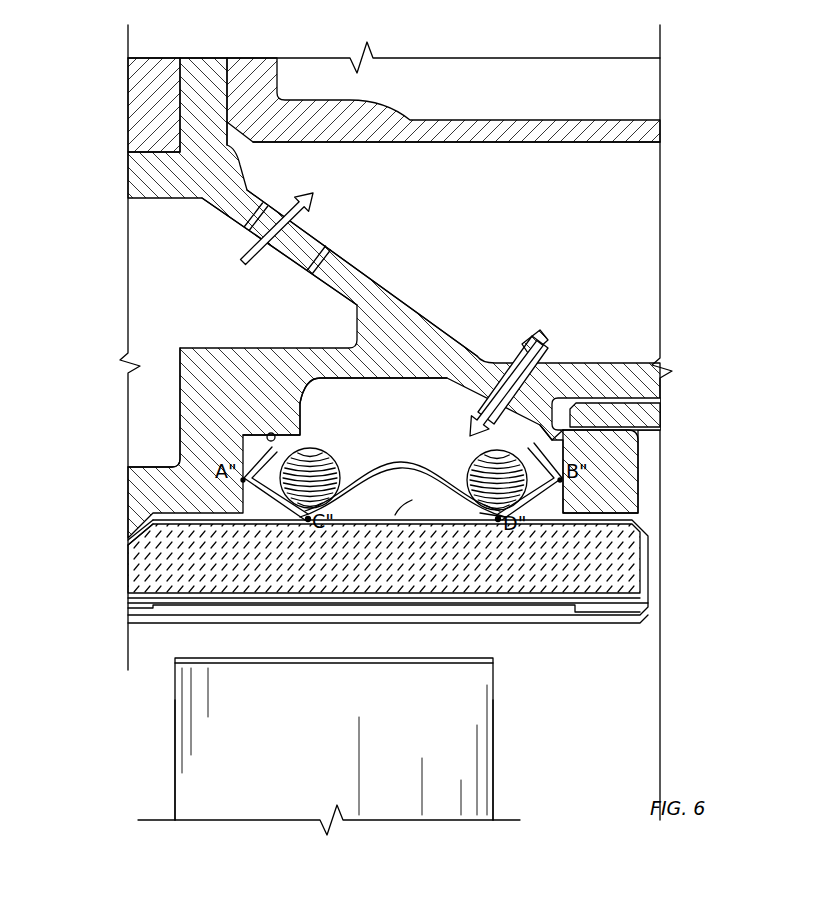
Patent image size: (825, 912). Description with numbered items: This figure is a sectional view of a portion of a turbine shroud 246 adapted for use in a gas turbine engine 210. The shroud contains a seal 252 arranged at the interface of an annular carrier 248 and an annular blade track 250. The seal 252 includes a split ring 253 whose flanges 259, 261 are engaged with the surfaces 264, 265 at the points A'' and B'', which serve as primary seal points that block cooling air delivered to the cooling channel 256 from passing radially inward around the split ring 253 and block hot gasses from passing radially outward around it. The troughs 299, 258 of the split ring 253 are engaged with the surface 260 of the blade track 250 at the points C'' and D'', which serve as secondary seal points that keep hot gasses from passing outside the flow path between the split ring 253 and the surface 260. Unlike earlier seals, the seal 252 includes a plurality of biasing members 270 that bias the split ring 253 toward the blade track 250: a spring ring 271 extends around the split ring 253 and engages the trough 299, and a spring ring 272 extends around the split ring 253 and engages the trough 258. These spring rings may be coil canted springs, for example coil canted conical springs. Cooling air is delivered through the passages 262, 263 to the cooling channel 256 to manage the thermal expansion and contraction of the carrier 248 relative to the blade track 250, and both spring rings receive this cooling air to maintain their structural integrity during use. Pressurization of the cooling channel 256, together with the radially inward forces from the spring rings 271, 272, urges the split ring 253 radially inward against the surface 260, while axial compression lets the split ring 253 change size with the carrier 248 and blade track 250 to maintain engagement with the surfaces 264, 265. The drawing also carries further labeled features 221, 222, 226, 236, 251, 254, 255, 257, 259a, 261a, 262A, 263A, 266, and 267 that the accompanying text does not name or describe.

The gas turbine engine 210 is at (742, 258).
The stem 221 is at (152, 729).
The stem portion 222 is at (580, 712).
The stem wall 226 is at (496, 765).
The stem bore 236 is at (292, 692).
The turbine shroud 246 is at (643, 289).
The carrier 248 is at (338, 208).
The blade track 250 is at (748, 560).
The plate body 251 is at (652, 575).
The seal 252 is at (425, 360).
The split ring 253 is at (384, 454).
The membrane 254 is at (402, 456).
The membrane flank 255 is at (362, 478).
The cooling channel 256 is at (547, 444).
The spring 257 is at (451, 480).
The trough 258 is at (530, 512).
The flange 259 is at (300, 430).
The left clip 259a is at (238, 482).
The surface 260 is at (400, 512).
The flange 261 is at (600, 426).
The seal block 261a is at (565, 492).
The passage 262 is at (302, 257).
The flow direction arrow 262A is at (268, 243).
The passage 263 is at (498, 372).
The passage inlet 263A is at (537, 331).
The surface 264 is at (240, 427).
The surface 265 is at (563, 462).
The hole 266 is at (268, 432).
The clip support 267 is at (557, 443).
The biasing members 270 is at (493, 318).
The spring ring 271 is at (314, 438).
The spring ring 272 is at (491, 438).
The trough 299 is at (305, 520).